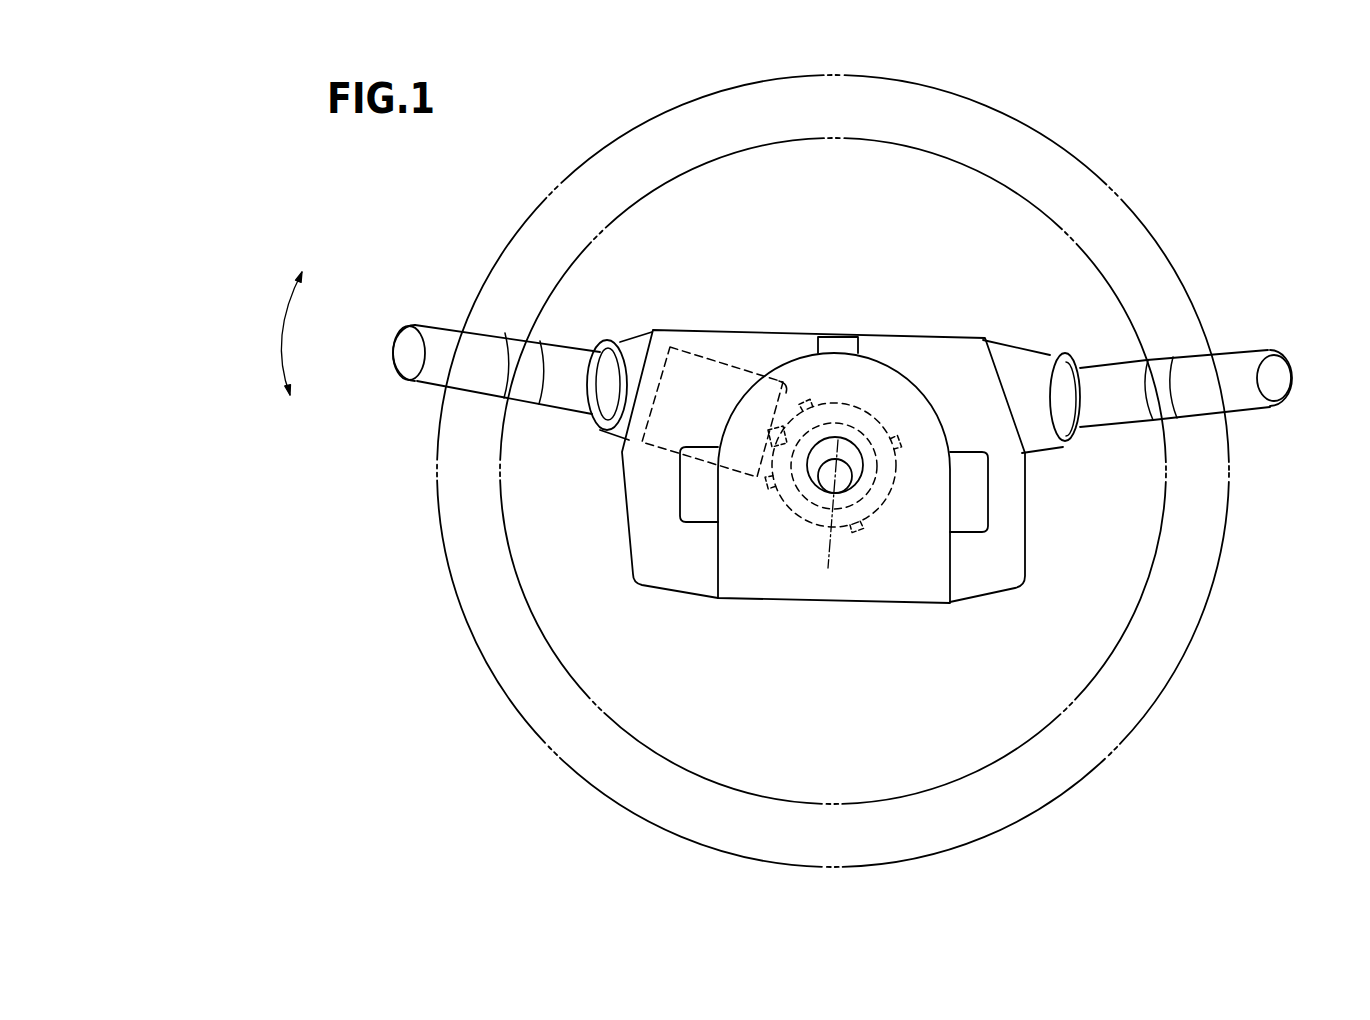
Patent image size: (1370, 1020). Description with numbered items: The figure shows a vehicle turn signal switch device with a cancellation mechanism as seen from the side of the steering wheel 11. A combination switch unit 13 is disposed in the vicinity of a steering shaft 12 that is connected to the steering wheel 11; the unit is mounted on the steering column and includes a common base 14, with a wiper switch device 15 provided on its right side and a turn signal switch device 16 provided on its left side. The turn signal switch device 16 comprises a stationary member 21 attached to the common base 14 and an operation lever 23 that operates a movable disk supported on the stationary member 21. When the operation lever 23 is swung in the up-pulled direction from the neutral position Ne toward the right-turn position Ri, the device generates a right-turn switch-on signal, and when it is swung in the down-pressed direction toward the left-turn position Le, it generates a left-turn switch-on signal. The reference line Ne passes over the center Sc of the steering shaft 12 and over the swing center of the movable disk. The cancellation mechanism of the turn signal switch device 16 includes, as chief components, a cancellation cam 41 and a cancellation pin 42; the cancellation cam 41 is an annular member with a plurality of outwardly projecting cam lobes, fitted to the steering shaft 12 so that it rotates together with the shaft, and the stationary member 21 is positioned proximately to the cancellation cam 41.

The steering wheel 11 is at (1077, 157).
The steering shaft 12 is at (823, 487).
The combination switch unit 13 is at (831, 320).
The common base 14 is at (930, 353).
The wiper switch device 15 is at (1030, 370).
The turn signal switch device 16 is at (637, 327).
The stationary member 21 is at (705, 352).
The operation lever 23 is at (448, 333).
The cancellation cam 41 is at (821, 413).
The cancellation pin 42 is at (780, 383).
The center of the steering shaft Sc is at (831, 545).
The right-turn position Ri is at (836, 455).
The neutral position Ne is at (600, 380).
The left-turn position Le is at (593, 388).